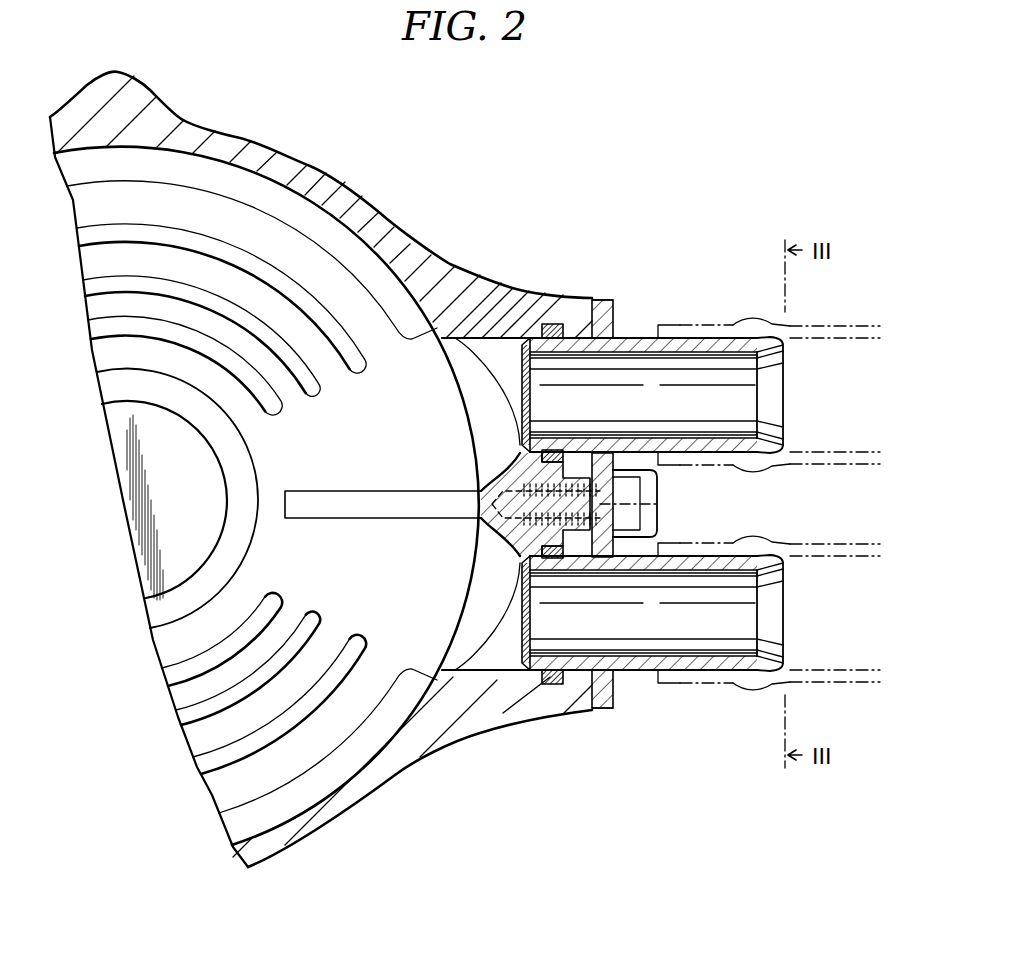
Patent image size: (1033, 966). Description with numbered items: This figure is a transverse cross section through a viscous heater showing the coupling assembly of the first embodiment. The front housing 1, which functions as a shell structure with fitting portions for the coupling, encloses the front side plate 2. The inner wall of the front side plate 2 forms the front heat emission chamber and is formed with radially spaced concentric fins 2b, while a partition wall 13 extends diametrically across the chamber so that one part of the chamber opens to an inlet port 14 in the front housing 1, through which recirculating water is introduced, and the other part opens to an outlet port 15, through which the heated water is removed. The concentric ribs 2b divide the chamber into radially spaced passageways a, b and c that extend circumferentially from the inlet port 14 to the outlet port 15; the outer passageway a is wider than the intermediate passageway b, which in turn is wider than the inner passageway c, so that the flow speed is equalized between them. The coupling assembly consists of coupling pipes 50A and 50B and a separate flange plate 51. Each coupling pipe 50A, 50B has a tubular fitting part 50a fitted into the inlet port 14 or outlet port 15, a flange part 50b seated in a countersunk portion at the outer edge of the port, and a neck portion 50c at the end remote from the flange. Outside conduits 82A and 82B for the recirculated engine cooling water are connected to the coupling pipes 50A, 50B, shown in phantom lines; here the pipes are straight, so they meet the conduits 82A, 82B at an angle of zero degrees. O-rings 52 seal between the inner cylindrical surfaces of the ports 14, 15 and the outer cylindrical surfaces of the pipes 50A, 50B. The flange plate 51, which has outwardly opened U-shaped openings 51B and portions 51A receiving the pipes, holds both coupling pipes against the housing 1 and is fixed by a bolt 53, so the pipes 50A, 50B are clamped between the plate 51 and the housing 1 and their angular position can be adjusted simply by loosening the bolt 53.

The front housing 1 is at (415, 268).
The front side plate 2 is at (330, 225).
The concentric fins 2b is at (227, 250).
The partition wall 13 is at (353, 520).
The inlet port 14 is at (495, 343).
The outlet port 15 is at (507, 662).
The coupling pipe 50A is at (673, 338).
The coupling pipe 50B is at (672, 660).
The tubular fitting part 50a is at (543, 343).
The flange part 50b is at (603, 318).
The neck portion 50c is at (758, 336).
The flange plate 51 is at (605, 560).
The upper plate portion 51A is at (614, 300).
The U-shaped opening 51B is at (603, 708).
The O-ring 52 is at (552, 324).
The bolt 53 is at (645, 500).
The outside conduit 82A is at (852, 322).
The outside conduit 82B is at (848, 546).
The outer passageway a is at (350, 717).
The intermediate passageway b is at (272, 705).
The inner passageway c is at (230, 640).